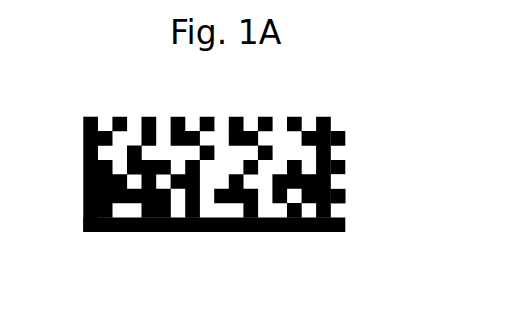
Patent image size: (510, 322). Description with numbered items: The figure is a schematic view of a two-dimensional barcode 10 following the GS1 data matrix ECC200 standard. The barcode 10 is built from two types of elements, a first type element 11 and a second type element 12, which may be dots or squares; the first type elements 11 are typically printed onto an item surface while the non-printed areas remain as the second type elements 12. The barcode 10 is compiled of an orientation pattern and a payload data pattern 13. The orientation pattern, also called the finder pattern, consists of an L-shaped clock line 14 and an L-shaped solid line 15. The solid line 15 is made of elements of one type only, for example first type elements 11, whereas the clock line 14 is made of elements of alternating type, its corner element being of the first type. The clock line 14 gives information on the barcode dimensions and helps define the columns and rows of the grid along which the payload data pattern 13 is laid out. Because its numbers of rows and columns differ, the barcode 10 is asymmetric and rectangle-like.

The two-dimensional barcode 10 is at (116, 103).
The first type element 11 is at (347, 198).
The second type element 12 is at (340, 182).
The payload data pattern 13 is at (221, 180).
The clock line 14 is at (308, 117).
The solid line 15 is at (122, 230).